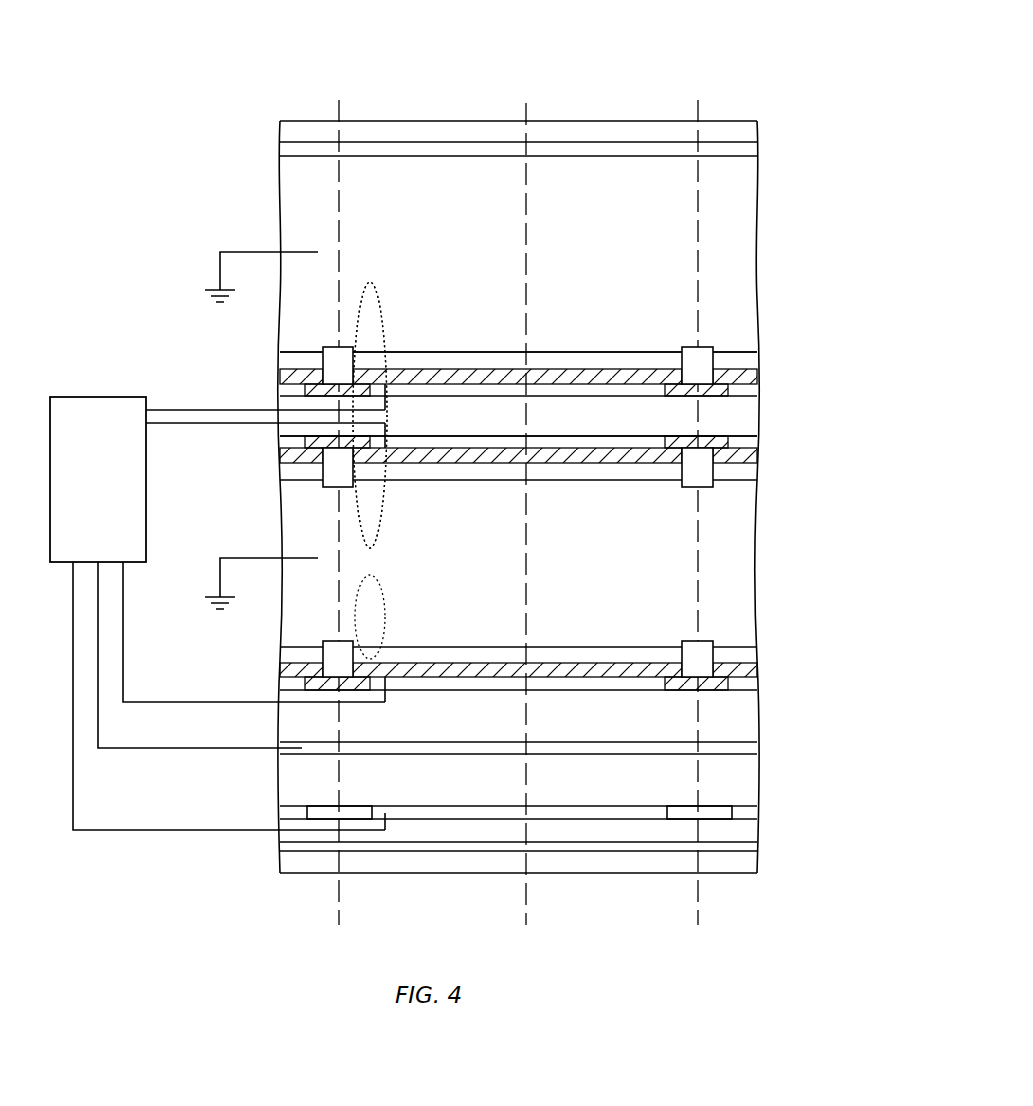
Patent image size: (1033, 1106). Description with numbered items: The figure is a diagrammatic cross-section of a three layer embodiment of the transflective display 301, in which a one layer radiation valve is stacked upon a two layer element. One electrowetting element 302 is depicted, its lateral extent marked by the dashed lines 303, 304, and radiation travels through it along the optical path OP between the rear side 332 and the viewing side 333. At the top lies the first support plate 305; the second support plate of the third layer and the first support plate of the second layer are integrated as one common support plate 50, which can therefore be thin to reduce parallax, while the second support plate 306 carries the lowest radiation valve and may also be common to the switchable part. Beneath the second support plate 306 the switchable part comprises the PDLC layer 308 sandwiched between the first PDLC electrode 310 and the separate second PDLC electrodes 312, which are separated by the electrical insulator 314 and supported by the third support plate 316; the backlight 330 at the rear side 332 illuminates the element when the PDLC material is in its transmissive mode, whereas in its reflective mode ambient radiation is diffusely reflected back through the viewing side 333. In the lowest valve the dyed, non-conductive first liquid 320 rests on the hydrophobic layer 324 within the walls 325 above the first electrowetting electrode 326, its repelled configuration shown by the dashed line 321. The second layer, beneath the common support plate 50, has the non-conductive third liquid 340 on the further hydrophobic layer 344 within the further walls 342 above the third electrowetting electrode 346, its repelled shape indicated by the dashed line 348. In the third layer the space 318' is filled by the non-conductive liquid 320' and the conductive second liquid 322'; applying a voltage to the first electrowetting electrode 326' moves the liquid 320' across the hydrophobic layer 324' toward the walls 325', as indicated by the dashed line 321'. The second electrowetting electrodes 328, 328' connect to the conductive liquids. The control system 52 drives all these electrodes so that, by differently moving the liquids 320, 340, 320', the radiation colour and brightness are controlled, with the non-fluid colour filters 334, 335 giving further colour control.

The display 301 is at (798, 108).
The electrowetting element 302 is at (449, 110).
The dashed line 303 is at (341, 105).
The optical path OP is at (529, 102).
The dashed line 304 is at (699, 105).
The first support plate 305 is at (745, 128).
The second non-fluid colour filter 335 is at (745, 151).
The viewing side 333 is at (641, 120).
The space 318' is at (611, 124).
The second liquid 322' is at (789, 252).
The control system 52 is at (112, 490).
The second electrowetting electrode 328' is at (236, 265).
The second electrowetting electrode 328 is at (239, 572).
The common support plate 50 is at (748, 411).
The hydrophobic layer 324' is at (518, 335).
The non-conductive liquid 320' is at (518, 357).
The walls 325' is at (523, 341).
The first electrowetting electrode 326' is at (518, 410).
The third electrowetting electrode 346 is at (480, 440).
The further hydrophobic layer 344 is at (600, 469).
The third liquid 340 is at (668, 470).
The further walls 342 is at (338, 487).
The dashed line 321' is at (403, 401).
The dashed line 348 is at (387, 510).
The dashed line 321 is at (404, 611).
The hydrophobic layer 324 is at (518, 630).
The first liquid 320 is at (518, 652).
The walls 325 is at (523, 635).
The first electrowetting electrode 326 is at (518, 708).
The second support plate 306 is at (750, 720).
The first PDLC electrode 310 is at (750, 748).
The PDLC layer 308 is at (750, 779).
The second PDLC electrode 312 is at (482, 808).
The electrical insulator 314 is at (682, 808).
The third support plate 316 is at (750, 842).
The backlight 330 is at (750, 866).
The rear side 332 is at (618, 874).
The first non-fluid colour filter 334 is at (292, 846).